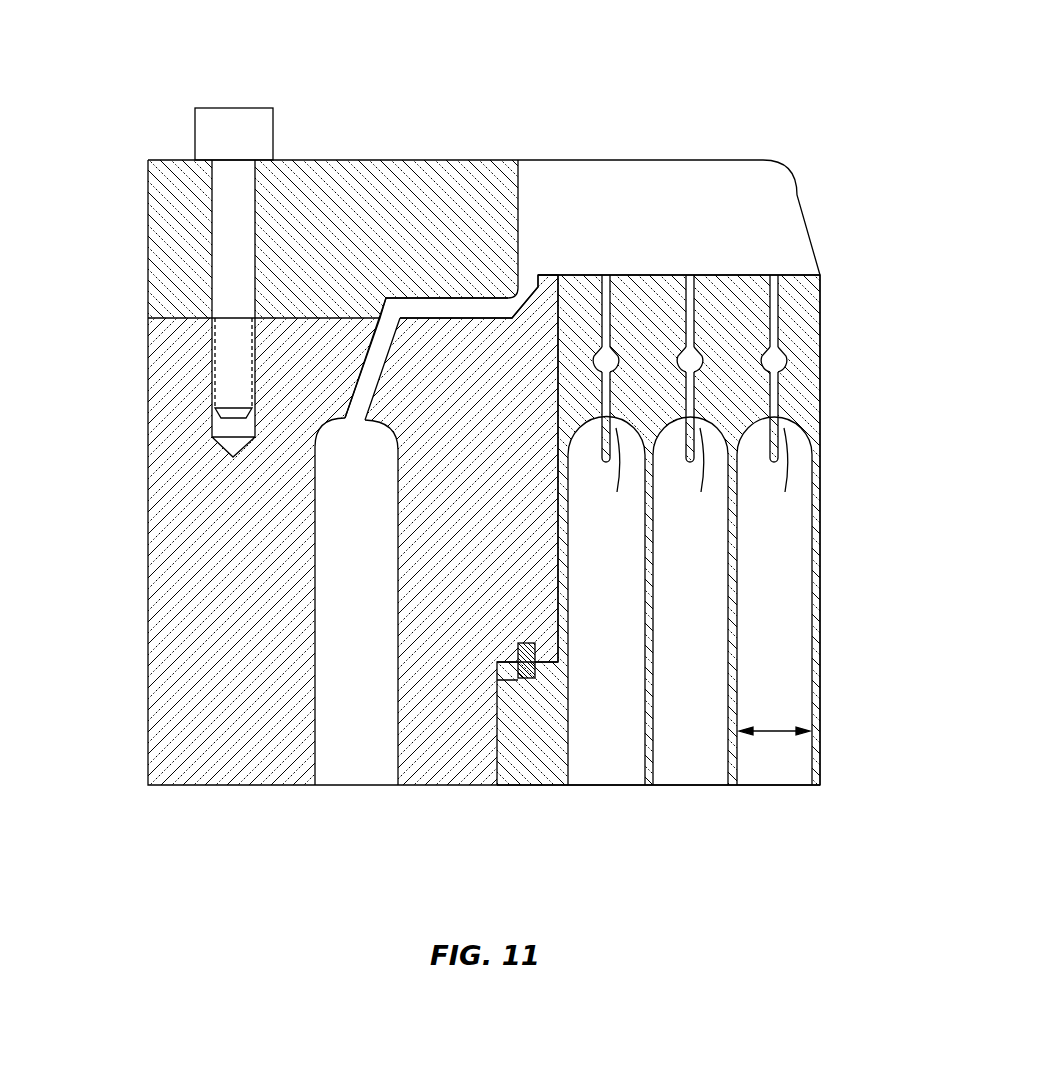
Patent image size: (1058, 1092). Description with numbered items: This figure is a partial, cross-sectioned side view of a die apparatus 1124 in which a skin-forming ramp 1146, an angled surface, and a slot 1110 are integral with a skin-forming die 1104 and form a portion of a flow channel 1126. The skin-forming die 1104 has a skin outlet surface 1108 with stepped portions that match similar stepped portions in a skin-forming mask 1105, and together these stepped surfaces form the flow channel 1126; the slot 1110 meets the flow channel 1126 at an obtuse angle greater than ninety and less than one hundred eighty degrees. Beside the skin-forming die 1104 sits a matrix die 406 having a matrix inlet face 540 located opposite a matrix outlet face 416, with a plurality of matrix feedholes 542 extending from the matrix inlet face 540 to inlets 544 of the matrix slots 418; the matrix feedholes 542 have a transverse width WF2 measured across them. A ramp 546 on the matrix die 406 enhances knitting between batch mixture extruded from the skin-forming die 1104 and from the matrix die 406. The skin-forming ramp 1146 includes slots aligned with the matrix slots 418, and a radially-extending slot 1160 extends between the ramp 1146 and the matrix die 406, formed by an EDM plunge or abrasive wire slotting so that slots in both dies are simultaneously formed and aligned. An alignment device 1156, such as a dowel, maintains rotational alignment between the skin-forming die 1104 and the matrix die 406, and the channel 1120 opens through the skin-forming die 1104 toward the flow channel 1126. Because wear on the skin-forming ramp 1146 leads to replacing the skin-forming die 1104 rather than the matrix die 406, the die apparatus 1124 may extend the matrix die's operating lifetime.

The die apparatus 1124 is at (580, 82).
The skin-forming mask 1105 is at (392, 160).
The skin outlet surface 1108 is at (170, 316).
The skin-forming die 1104 is at (146, 497).
The slot 1110 is at (357, 362).
The main channel 1120 is at (398, 757).
The flow channel 1126 is at (405, 304).
The skin-forming ramp 1146 is at (529, 284).
The radially-extending slot 1160 is at (553, 322).
The alignment device 1156 is at (518, 673).
The matrix die 406 is at (822, 418).
The matrix outlet face 416 is at (797, 273).
The matrix slots 418 is at (691, 273).
The ramp 546 is at (780, 355).
The inlets 544 is at (691, 441).
The matrix feedholes 542 is at (812, 757).
The matrix inlet face 540 is at (786, 790).
The channel width WF2 is at (785, 728).